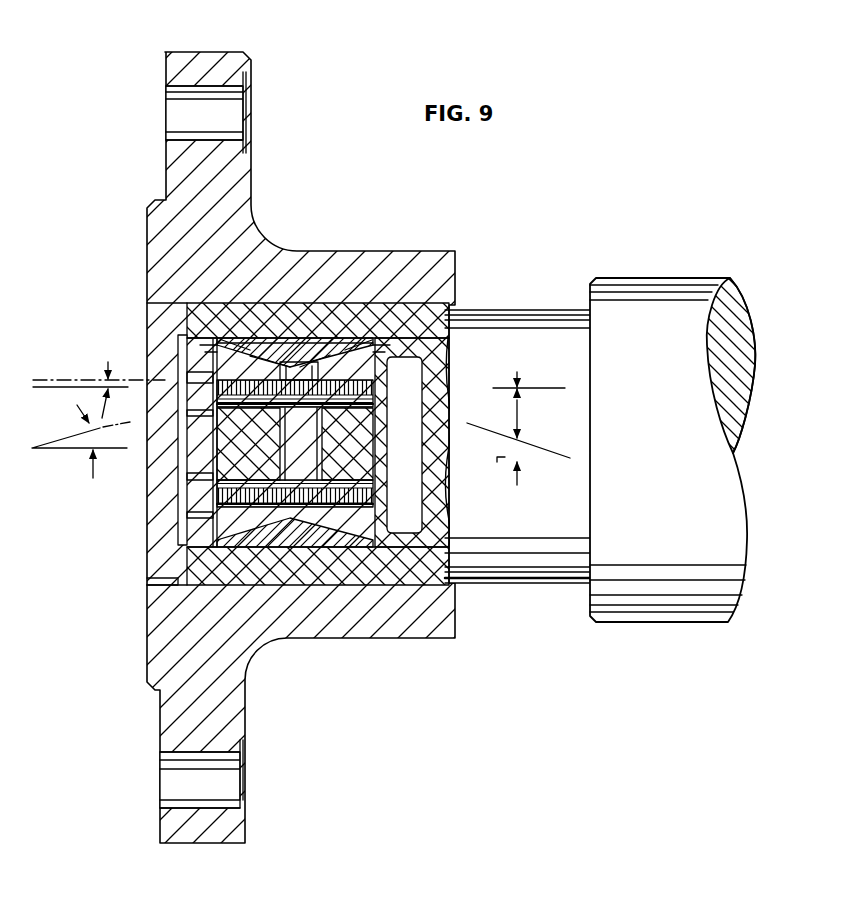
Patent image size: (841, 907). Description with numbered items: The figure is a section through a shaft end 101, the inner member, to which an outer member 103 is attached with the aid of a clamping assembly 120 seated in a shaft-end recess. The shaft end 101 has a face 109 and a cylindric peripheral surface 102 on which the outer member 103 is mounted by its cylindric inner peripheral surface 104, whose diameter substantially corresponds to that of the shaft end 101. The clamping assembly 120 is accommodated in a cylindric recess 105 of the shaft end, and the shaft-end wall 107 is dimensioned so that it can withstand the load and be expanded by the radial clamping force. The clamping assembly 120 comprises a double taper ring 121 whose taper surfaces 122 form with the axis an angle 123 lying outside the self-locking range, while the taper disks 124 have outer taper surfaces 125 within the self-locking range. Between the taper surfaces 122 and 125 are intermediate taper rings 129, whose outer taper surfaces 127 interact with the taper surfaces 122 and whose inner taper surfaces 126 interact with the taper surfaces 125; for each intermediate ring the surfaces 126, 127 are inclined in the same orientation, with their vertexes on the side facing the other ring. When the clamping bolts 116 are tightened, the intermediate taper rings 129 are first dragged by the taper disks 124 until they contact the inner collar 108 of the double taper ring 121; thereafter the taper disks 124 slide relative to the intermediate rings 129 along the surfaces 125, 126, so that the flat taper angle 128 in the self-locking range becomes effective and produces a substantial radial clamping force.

The shaft end 101 is at (560, 540).
The cylindric peripheral surface 102 is at (510, 583).
The outer member 103 is at (215, 665).
The cylindric inner peripheral surface 104 is at (165, 582).
The cylindric recess 105 is at (178, 540).
The shaft-end wall 107 is at (370, 575).
The inner collar 108 is at (318, 362).
The face 109 is at (178, 565).
The clamping bolts 116 is at (215, 400).
The clamping assembly 120 is at (128, 505).
The double taper ring 121 is at (340, 352).
The taper surfaces 122 is at (205, 346).
The angle 123 is at (90, 478).
The taper disks 124 is at (215, 460).
The outer taper surfaces 125 is at (210, 354).
The inner taper surfaces 126 is at (217, 390).
The outer taper surfaces 127 is at (280, 355).
The flat taper angle 128 is at (103, 362).
The intermediate taper rings 129 is at (250, 348).